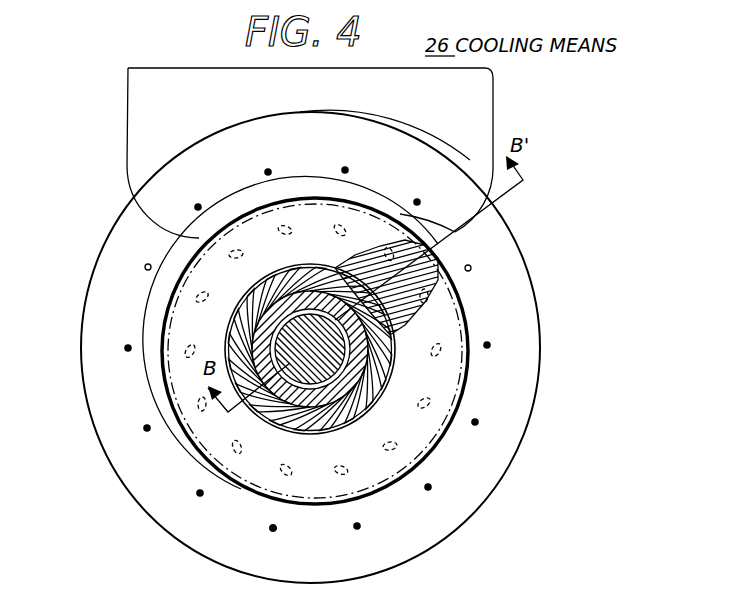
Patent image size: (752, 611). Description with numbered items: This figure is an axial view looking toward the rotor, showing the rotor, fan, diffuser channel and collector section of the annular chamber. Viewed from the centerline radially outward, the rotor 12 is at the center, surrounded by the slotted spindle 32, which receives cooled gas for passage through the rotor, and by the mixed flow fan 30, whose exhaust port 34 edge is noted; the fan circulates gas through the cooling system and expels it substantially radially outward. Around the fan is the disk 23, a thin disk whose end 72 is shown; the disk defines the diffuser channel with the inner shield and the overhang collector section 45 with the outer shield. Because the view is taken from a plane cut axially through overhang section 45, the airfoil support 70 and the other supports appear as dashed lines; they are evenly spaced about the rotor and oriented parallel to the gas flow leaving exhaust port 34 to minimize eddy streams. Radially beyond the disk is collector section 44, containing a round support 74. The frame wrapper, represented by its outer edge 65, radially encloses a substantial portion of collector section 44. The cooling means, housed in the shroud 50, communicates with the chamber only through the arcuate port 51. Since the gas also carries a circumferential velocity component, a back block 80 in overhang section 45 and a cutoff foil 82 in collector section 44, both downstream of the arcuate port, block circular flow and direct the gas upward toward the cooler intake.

The shroud 50 is at (446, 101).
The arcuate port 51 is at (455, 152).
The cutoff foil 82 is at (485, 231).
The back block 80 is at (440, 280).
The slotted spindle 32 is at (298, 285).
The fan 30 is at (242, 298).
The rotor 12 is at (323, 370).
The overhang collector section 45 is at (430, 384).
The exhaust port 34 is at (352, 417).
The airfoil support 70 is at (340, 470).
The end of disk 72 is at (390, 490).
The collector section 44 is at (479, 481).
The outer edge of frame wrapper 65 is at (489, 496).
The disk 23 is at (315, 518).
The round support 74 is at (270, 529).